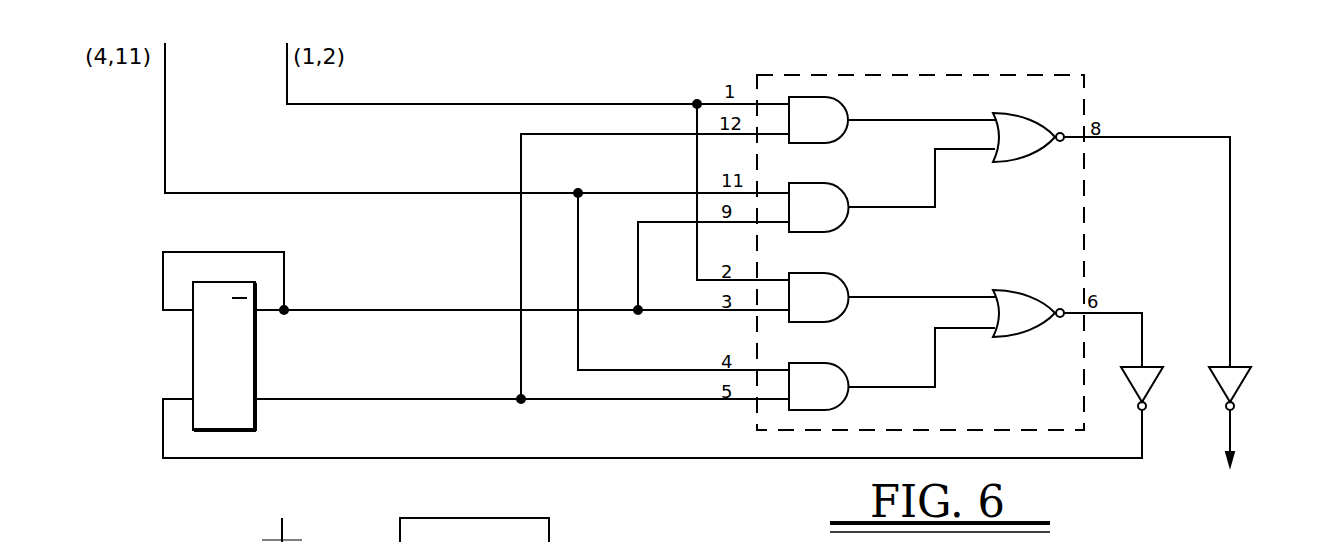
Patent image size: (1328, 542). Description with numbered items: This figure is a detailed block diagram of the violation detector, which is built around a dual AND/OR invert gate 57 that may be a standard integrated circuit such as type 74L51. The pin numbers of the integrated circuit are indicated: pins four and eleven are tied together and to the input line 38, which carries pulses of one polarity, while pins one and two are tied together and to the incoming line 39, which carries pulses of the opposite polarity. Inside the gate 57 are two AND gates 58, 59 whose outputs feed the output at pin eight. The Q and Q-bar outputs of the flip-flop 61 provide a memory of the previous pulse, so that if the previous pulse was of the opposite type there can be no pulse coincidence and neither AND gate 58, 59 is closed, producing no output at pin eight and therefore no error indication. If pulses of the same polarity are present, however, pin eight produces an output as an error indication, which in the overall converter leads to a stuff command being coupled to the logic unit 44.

The input line 38 is at (165, 142).
The incoming line 39 is at (287, 80).
The logic unit 44 is at (1232, 438).
The dual AND/OR invert gate 57 is at (920, 239).
The AND gate 58 is at (840, 99).
The AND gate 59 is at (828, 183).
The flip-flop 61 is at (255, 376).